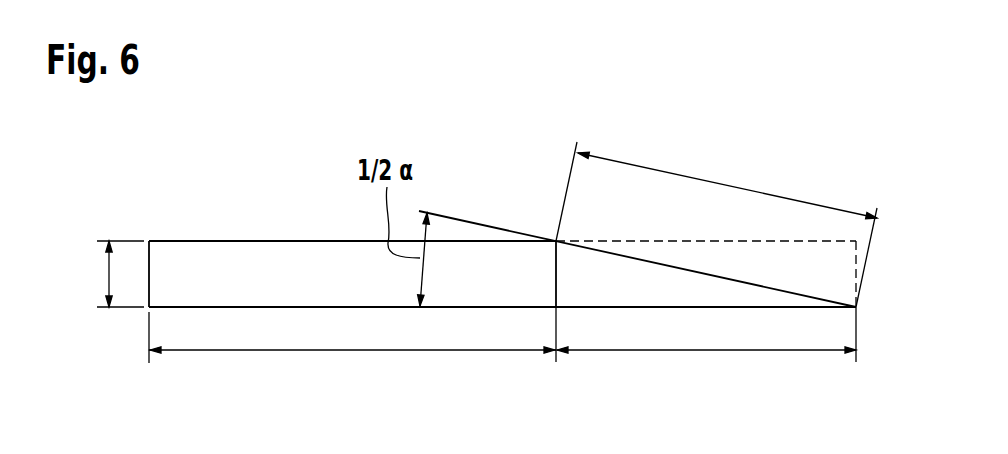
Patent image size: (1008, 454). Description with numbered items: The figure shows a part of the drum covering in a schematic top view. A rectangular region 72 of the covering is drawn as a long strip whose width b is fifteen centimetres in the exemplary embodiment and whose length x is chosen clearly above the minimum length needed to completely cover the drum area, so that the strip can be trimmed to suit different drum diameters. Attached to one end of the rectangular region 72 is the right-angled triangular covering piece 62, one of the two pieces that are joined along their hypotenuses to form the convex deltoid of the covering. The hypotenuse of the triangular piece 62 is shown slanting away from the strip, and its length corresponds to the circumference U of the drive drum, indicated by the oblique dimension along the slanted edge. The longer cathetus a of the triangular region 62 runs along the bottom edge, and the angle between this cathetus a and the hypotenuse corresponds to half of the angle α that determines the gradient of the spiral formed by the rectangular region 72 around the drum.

The rectangular region 72 is at (283, 255).
The right-angled triangular covering piece 62 is at (660, 285).
The width of the rectangular regions b is at (108, 277).
The length of the rectangular regions x is at (353, 352).
The longer cathetus a is at (703, 352).
The circumference U is at (733, 185).